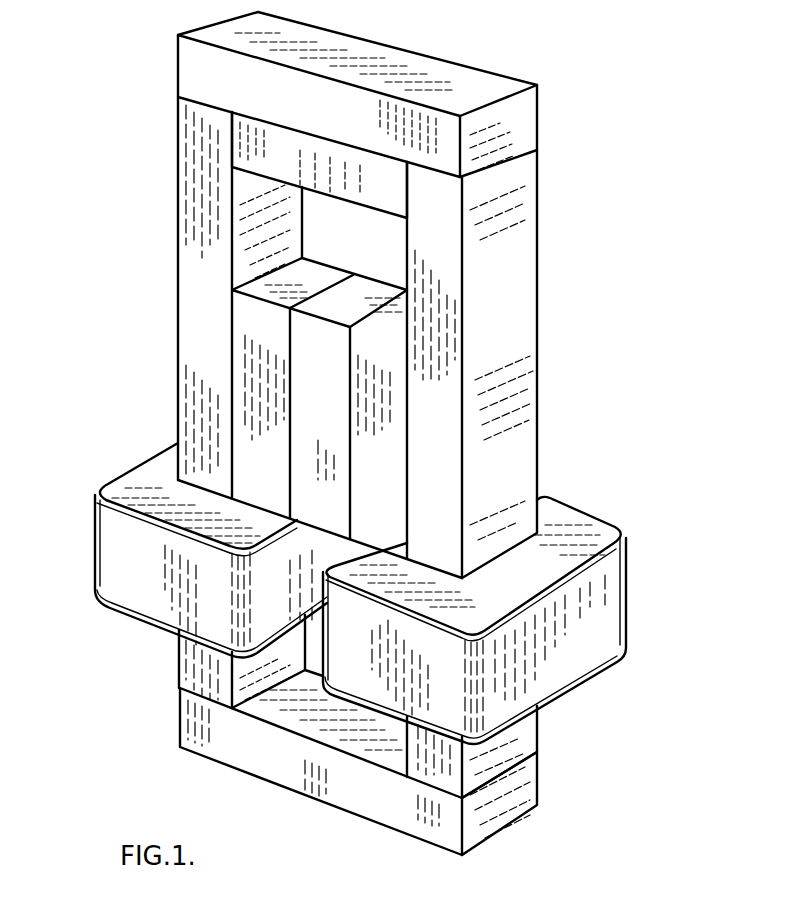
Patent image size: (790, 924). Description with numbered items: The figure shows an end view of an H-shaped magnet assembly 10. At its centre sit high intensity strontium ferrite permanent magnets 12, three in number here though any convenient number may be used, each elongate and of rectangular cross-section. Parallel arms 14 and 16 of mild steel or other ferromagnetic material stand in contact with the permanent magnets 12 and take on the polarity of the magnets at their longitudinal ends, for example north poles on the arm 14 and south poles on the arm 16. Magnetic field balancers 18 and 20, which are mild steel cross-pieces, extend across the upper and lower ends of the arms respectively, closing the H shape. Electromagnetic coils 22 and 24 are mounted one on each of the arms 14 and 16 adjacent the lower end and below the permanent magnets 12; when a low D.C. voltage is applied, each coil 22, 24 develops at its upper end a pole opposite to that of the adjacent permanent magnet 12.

The H-shaped magnet assembly 10 is at (570, 146).
The permanent magnets 12 is at (332, 327).
The arm 14 is at (192, 270).
The arm 16 is at (528, 243).
The magnetic field balancer 18 is at (443, 72).
The magnetic field balancer 20 is at (343, 792).
The electromagnetic coil 22 is at (110, 555).
The electromagnetic coil 24 is at (610, 613).